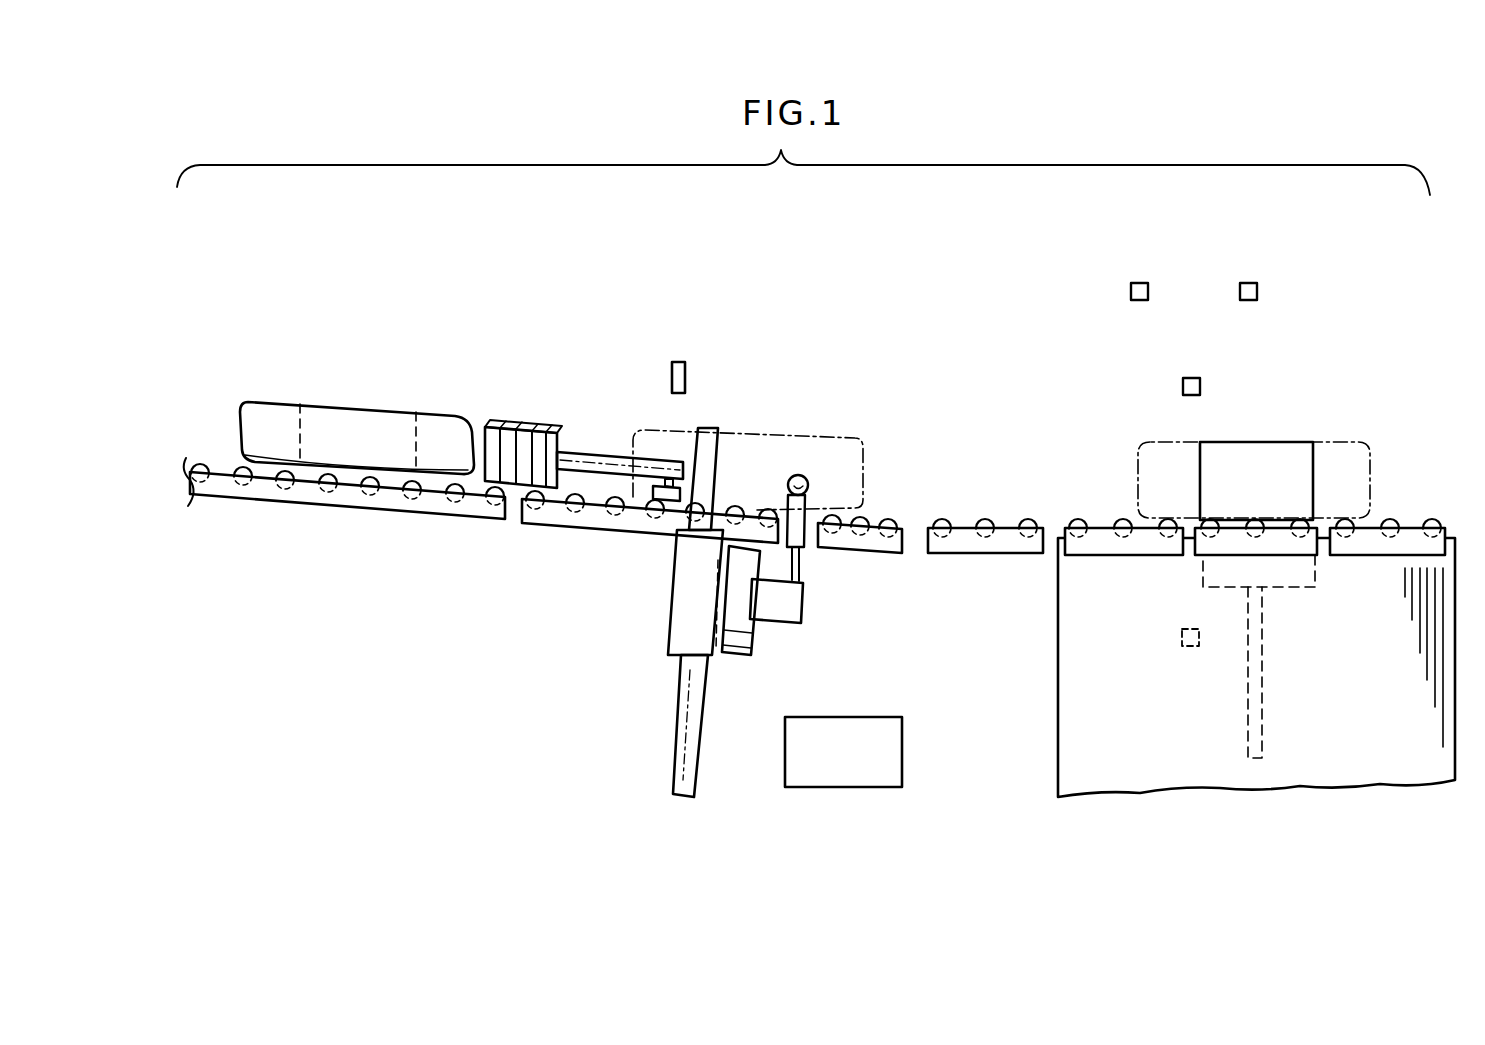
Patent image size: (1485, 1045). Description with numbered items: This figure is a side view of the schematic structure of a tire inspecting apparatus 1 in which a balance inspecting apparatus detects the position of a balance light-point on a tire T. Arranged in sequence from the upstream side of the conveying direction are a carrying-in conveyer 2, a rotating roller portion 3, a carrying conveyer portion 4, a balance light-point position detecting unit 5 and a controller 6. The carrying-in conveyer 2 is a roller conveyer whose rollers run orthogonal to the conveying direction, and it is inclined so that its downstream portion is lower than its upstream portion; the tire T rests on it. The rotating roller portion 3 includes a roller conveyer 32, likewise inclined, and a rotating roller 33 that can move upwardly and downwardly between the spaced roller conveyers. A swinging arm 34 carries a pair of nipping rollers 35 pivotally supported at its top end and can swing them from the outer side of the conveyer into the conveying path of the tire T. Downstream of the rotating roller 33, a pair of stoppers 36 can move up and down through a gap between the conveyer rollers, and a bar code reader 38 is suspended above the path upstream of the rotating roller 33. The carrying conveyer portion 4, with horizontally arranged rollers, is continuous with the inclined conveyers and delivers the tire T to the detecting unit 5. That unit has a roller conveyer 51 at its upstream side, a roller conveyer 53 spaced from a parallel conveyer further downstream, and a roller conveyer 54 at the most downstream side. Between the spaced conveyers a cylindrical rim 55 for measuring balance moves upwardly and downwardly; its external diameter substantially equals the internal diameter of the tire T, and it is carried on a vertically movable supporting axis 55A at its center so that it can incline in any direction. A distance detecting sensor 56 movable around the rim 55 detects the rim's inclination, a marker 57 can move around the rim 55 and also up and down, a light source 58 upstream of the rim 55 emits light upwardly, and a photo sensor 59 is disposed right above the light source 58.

The tire inspecting apparatus 1 is at (986, 290).
The carrying-in conveyer 2 is at (356, 392).
The tire T is at (285, 397).
The rotating roller portion 3 is at (706, 388).
The carrying conveyer portion 4 is at (1012, 507).
The balance light-point position detecting unit 5 is at (1230, 434).
The controller 6 is at (845, 789).
The roller conveyer 32 is at (596, 533).
The rotating roller 33 is at (707, 432).
The swinging arm 34 is at (590, 447).
The nipping rollers 35 is at (548, 432).
The stoppers 36 is at (800, 475).
The bar code reader 38 is at (672, 375).
The roller conveyer 51 is at (1132, 558).
The roller conveyer 53 is at (1270, 558).
The roller conveyer 54 is at (1364, 558).
The rim 55 is at (1287, 442).
The supporting axis 55A is at (1262, 740).
The distance detecting sensor 56 is at (1144, 284).
The marker 57 is at (1255, 284).
The light source 58 is at (1188, 647).
The photo sensor 59 is at (1190, 378).